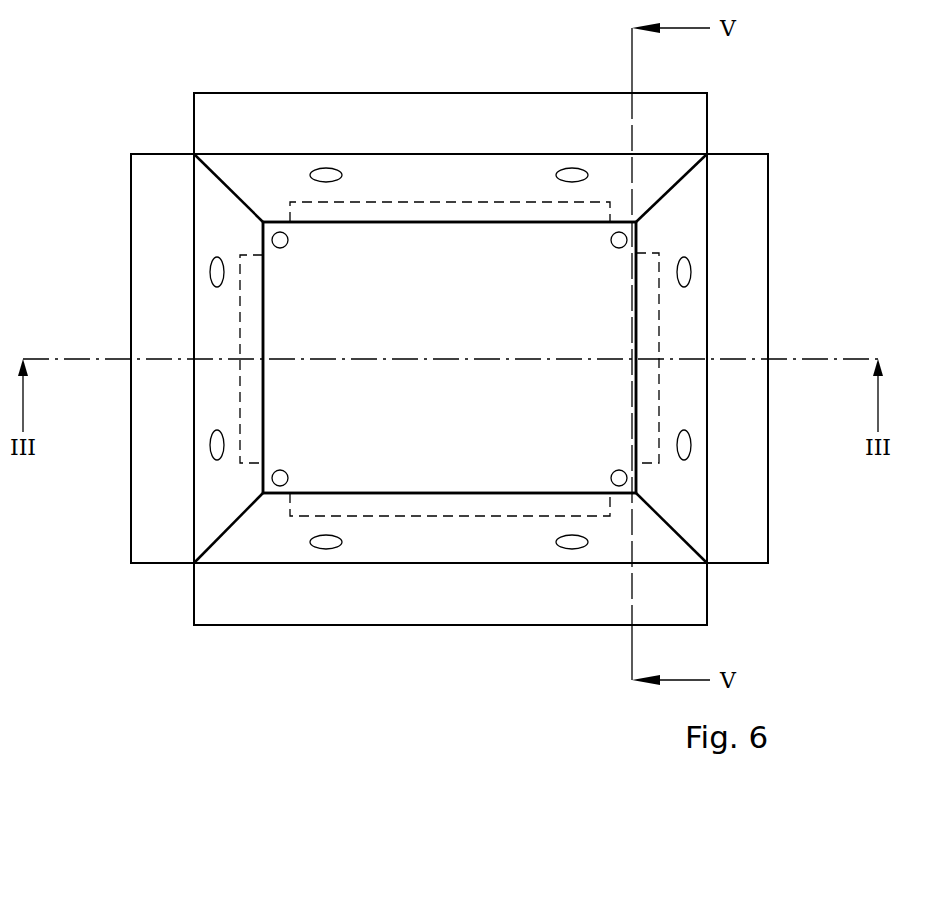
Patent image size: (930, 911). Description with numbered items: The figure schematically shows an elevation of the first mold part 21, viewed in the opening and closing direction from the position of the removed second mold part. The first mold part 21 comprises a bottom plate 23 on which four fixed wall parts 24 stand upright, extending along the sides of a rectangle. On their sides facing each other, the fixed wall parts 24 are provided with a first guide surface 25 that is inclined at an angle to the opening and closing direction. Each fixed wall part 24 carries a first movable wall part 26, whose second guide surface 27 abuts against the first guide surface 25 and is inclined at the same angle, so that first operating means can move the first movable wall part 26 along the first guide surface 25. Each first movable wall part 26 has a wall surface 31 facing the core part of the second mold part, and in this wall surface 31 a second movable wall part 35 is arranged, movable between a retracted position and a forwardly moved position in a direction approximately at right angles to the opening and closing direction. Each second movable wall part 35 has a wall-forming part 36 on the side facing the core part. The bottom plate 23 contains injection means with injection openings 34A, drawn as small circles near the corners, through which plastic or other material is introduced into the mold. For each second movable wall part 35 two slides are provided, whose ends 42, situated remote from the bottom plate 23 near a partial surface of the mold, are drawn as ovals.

The first mold part 21 is at (782, 139).
The bottom plate 23 is at (379, 255).
The fixed wall parts 24 is at (268, 115).
The first guide surface 25 is at (481, 154).
The second guide surface 27 is at (481, 154).
The first movable wall part 26 is at (430, 178).
The wall surface 31 is at (350, 456).
The injection openings 34A is at (286, 246).
The second movable wall part 35 is at (483, 210).
The wall-forming part 36 is at (406, 232).
The end of slide 42 is at (326, 175).